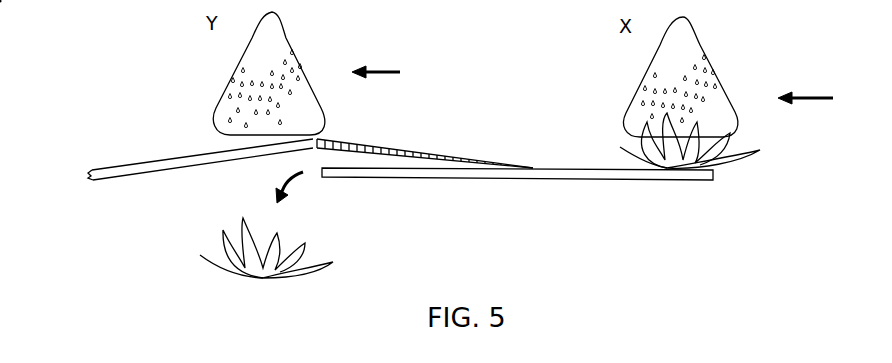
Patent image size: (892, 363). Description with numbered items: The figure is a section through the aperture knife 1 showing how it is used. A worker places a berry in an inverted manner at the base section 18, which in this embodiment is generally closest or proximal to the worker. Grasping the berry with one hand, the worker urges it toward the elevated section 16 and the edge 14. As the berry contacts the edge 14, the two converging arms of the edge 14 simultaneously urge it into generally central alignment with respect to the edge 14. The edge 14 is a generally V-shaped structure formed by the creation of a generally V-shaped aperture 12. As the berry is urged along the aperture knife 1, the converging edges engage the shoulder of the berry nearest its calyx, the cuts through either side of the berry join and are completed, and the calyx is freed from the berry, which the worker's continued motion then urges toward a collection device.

The aperture knife 1 is at (117, 148).
The aperture 12 is at (325, 162).
The edge 14 is at (452, 155).
The elevated section 16 is at (232, 155).
The base section 18 is at (647, 175).